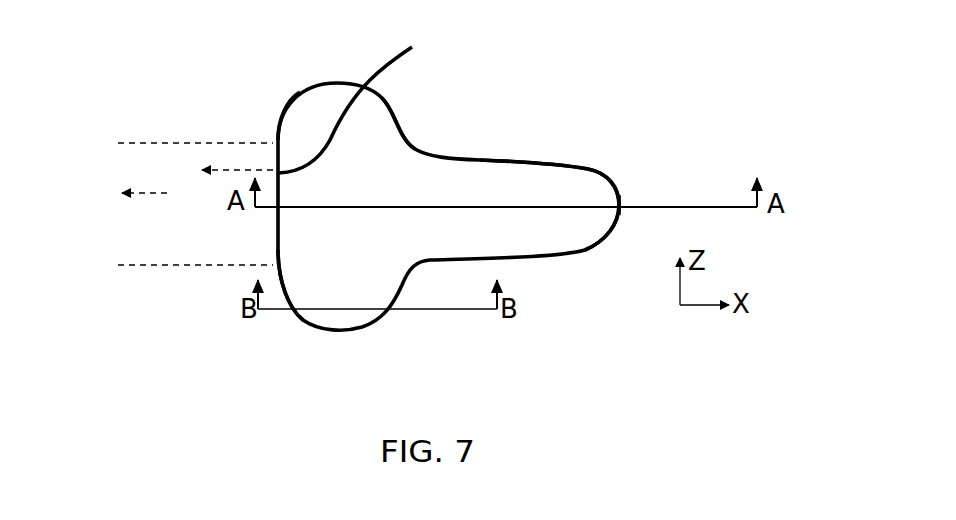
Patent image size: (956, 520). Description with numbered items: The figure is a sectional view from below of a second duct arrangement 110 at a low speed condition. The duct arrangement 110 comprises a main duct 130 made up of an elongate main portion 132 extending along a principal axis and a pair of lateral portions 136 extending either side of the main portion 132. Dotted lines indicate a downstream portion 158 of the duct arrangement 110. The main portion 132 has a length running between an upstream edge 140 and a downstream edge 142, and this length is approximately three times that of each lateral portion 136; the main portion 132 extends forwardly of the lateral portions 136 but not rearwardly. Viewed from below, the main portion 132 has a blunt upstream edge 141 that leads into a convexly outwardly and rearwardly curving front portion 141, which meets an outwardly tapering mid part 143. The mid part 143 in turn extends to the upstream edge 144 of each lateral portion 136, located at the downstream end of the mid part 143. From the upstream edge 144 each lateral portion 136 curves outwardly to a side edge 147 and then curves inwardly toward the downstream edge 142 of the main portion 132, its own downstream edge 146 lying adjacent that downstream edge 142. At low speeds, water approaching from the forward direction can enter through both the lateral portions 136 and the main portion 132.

The second duct arrangement 110 is at (476, 109).
The main duct 130 is at (423, 240).
The elongate main portion 132 is at (565, 228).
The lateral portion 136 is at (320, 283).
The upstream edge of main portion 140 is at (621, 198).
The blunt upstream edge and front portion 141 is at (613, 177).
The mid part 143 is at (505, 158).
The upstream edge of lateral portion 144 is at (412, 147).
The downstream edge of lateral portion 146 is at (283, 118).
The side edge 147 is at (320, 83).
The downstream edge of main portion 142 is at (277, 237).
The downstream portion 158 is at (143, 160).